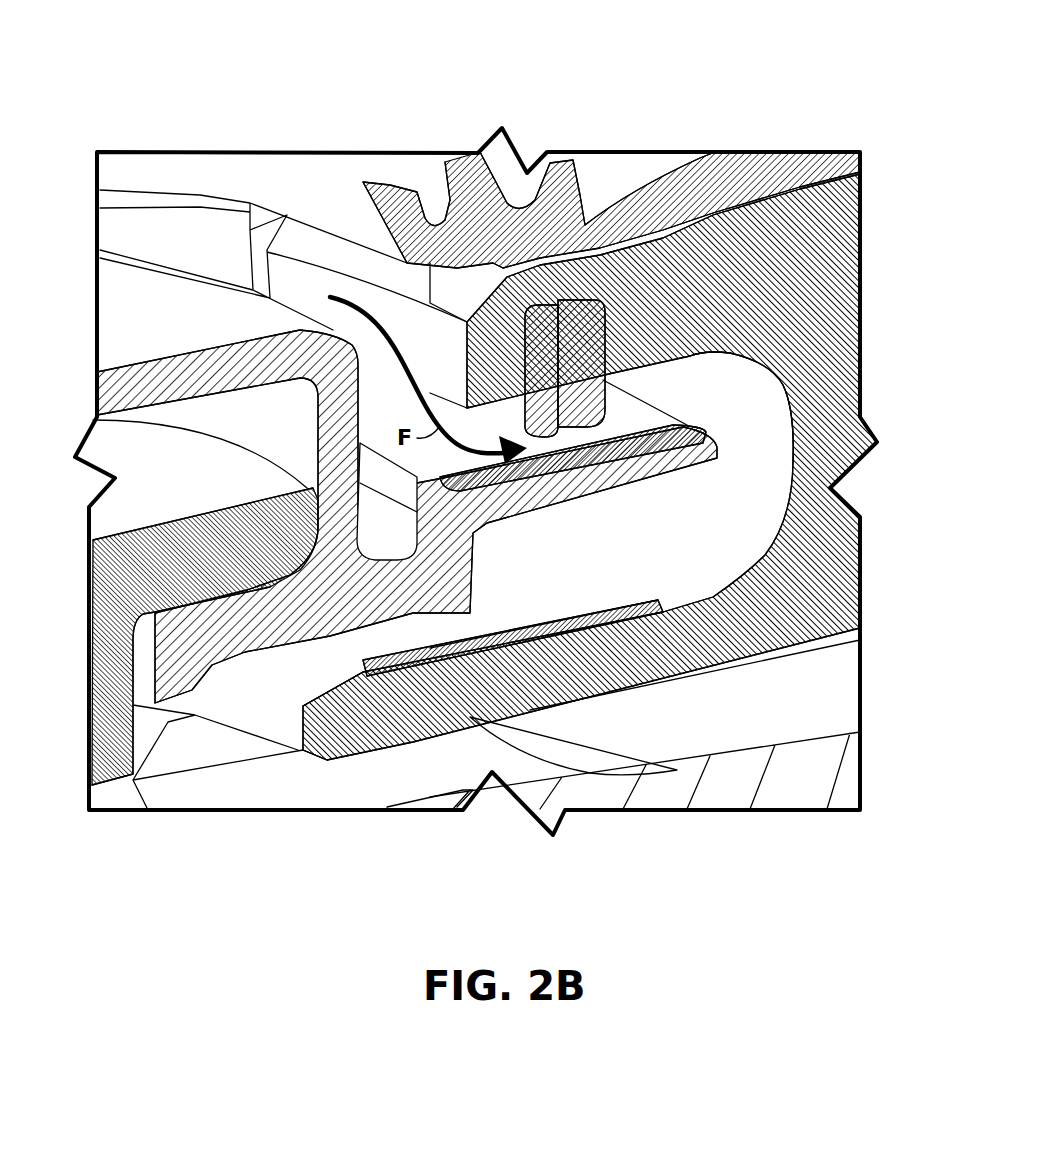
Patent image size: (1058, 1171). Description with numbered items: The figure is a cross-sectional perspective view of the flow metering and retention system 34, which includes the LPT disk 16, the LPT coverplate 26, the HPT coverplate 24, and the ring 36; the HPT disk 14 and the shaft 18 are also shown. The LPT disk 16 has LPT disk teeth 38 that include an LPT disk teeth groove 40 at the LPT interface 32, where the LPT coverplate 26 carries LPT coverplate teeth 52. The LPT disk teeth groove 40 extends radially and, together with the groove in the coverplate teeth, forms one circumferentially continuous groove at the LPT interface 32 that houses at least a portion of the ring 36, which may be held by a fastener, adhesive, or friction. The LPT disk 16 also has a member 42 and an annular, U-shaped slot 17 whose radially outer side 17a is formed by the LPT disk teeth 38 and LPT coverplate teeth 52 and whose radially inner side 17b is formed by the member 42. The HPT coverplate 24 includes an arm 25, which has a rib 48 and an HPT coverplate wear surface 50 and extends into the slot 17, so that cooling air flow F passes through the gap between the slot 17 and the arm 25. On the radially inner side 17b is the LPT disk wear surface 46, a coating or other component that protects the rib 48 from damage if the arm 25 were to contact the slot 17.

The flow metering and retention system 34 is at (172, 102).
The LPT coverplate teeth 52 is at (221, 233).
The LPT interface 32 is at (502, 258).
The LPT disk teeth 38 is at (537, 293).
The LPT disk teeth groove 40 is at (585, 342).
The LPT coverplate 26 is at (754, 172).
The ring 36 is at (590, 335).
The LPT disk 16 is at (820, 310).
The radially outer side 17a is at (735, 340).
The HPT coverplate 24 is at (120, 390).
The slot 17 is at (775, 450).
The HPT disk 14 is at (115, 592).
The HPT coverplate wear surface 50 is at (670, 435).
The arm 25 is at (650, 473).
The member 42 is at (343, 730).
The LPT disk wear surface 46 is at (437, 652).
The rib 48 is at (470, 600).
The radially inner side 17b is at (710, 600).
The shaft 18 is at (790, 768).